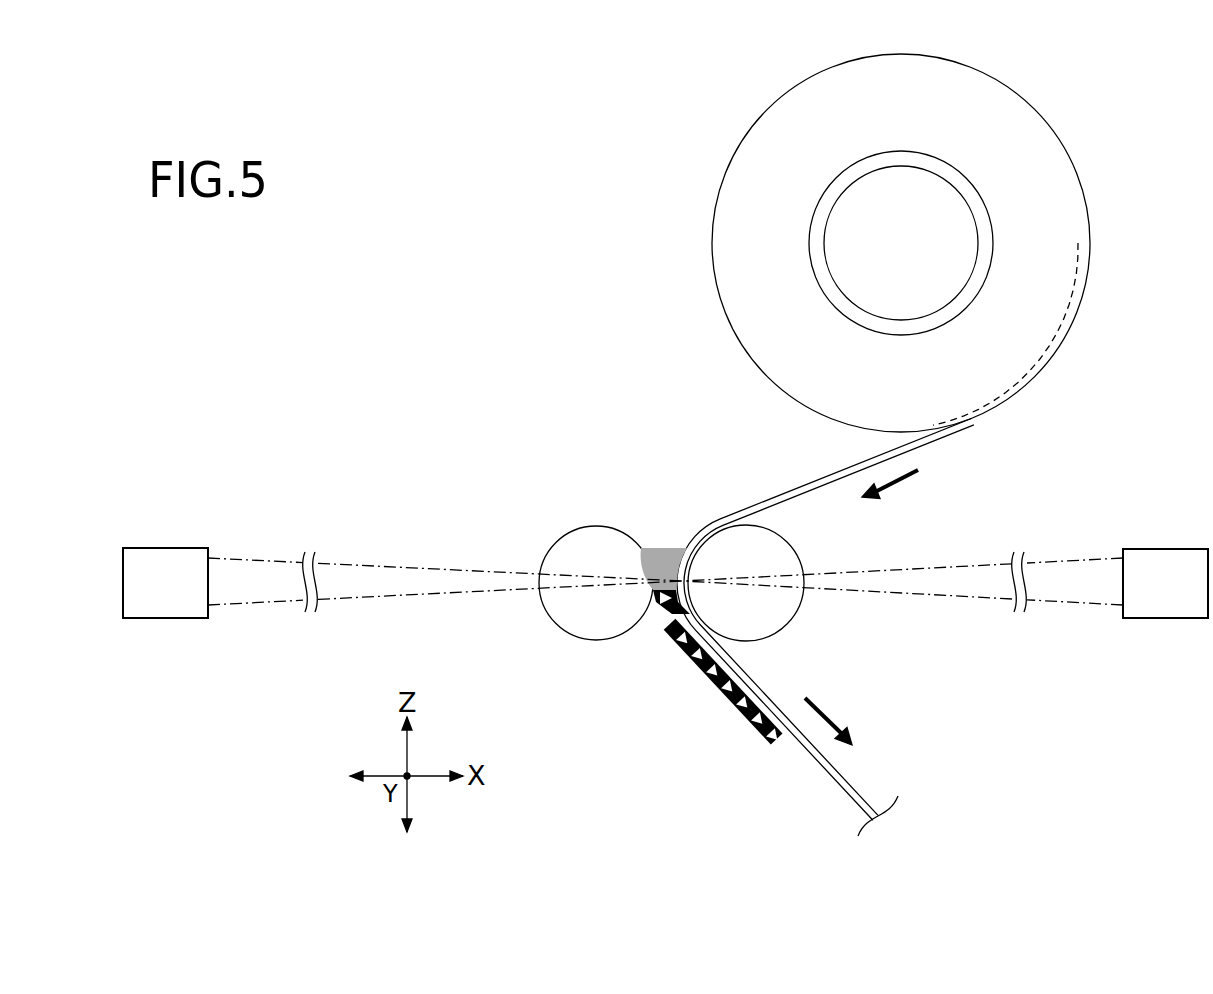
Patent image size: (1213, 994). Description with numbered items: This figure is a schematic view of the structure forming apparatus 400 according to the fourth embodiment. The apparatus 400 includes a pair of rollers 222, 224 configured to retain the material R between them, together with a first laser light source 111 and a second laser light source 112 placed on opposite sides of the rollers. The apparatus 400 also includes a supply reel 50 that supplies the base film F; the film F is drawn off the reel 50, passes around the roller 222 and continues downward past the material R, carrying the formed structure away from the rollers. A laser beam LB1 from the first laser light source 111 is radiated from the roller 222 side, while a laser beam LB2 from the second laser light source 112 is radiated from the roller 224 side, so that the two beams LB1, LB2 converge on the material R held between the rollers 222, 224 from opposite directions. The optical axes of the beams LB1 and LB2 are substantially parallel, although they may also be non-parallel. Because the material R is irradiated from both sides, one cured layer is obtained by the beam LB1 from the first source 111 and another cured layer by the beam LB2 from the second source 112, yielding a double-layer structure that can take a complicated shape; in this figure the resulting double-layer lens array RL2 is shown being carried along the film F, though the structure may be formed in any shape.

The structure forming apparatus 400 is at (588, 163).
The supply reel 50 is at (956, 174).
The base film F is at (811, 485).
The roller 222 is at (783, 555).
The roller 224 is at (594, 628).
The material R is at (669, 546).
The release layer RL2 is at (712, 688).
The second laser light source 112 is at (168, 557).
The first laser light source 111 is at (1166, 557).
The laser beam LB2 is at (380, 566).
The laser beam LB1 is at (976, 566).